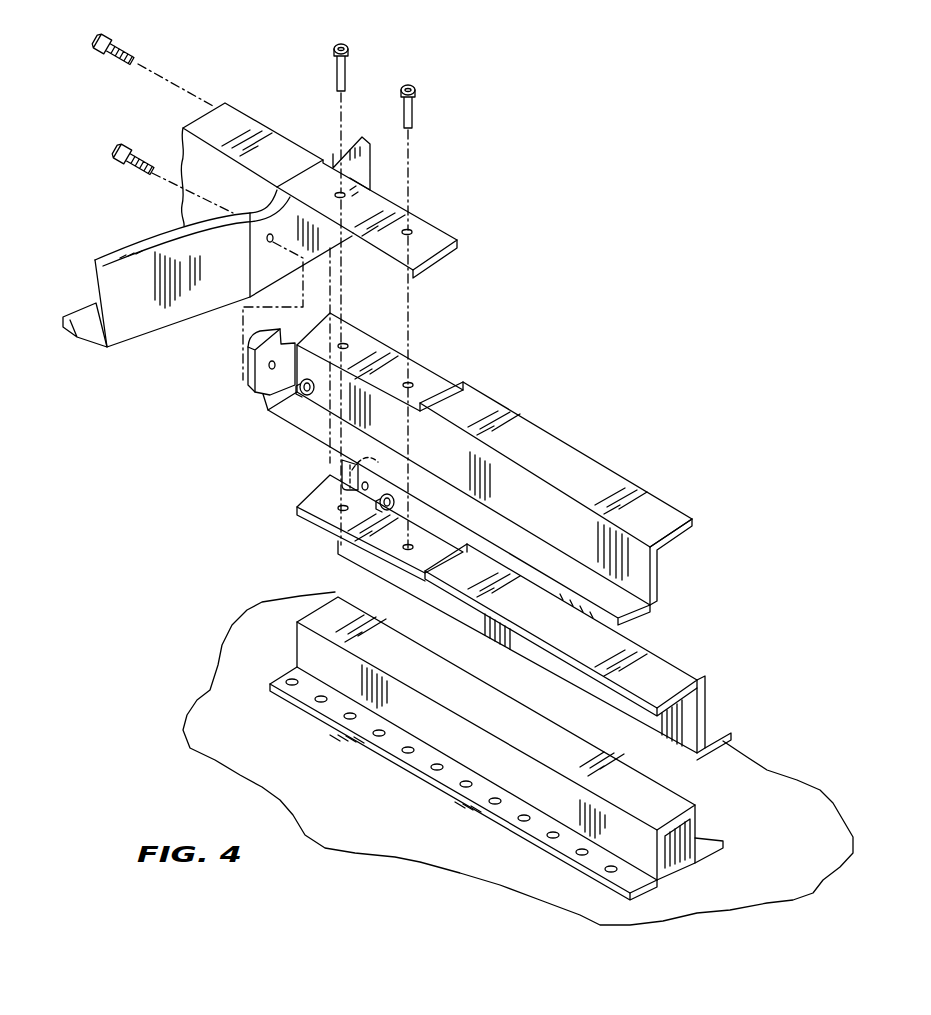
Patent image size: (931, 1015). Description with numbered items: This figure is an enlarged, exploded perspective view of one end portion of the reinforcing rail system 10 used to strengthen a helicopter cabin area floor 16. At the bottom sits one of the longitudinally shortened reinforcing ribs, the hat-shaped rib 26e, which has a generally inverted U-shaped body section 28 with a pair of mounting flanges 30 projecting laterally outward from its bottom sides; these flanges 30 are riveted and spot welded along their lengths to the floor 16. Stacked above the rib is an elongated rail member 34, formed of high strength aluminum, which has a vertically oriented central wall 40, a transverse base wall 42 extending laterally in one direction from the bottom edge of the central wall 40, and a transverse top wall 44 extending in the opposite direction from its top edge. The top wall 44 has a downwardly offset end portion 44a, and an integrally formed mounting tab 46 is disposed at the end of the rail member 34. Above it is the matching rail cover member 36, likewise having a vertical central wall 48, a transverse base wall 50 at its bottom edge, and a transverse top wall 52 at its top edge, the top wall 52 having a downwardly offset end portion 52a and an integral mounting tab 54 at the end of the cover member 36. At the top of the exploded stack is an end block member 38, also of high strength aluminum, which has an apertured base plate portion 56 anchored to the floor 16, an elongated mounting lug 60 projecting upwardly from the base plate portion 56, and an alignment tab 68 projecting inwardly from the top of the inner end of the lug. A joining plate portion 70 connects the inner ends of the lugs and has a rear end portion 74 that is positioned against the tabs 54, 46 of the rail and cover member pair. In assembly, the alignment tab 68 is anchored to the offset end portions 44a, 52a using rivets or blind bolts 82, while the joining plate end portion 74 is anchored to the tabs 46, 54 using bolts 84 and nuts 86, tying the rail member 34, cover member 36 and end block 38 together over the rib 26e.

The reinforcing rail system 10 is at (594, 394).
The cabin area floor 16 is at (348, 793).
The reinforcing rib 26e is at (672, 784).
The body section 28 is at (480, 757).
The mounting flanges 30 is at (333, 720).
The rail member 34 is at (664, 659).
The rail cover member 36 is at (602, 455).
The end block member 38 is at (260, 112).
The central wall 40 is at (620, 702).
The base wall 42 is at (718, 731).
The top wall 44 is at (696, 690).
The end portions 44a is at (336, 526).
The mounting tabs 46 is at (344, 485).
The central wall 48 is at (656, 573).
The base wall 50 is at (627, 603).
The top wall 52 is at (660, 516).
The end portions 52a is at (398, 354).
The mounting tabs 54 is at (248, 374).
The base plate portion 56 is at (84, 302).
The first mounting lug 60 is at (271, 148).
The alignment tabs 68 is at (428, 232).
The joining plate portion 70 is at (130, 320).
The rear end portion 74 is at (366, 166).
The rivets or blind bolts 82 is at (346, 72).
The bolts 84 is at (124, 50).
The nuts 86 is at (302, 394).